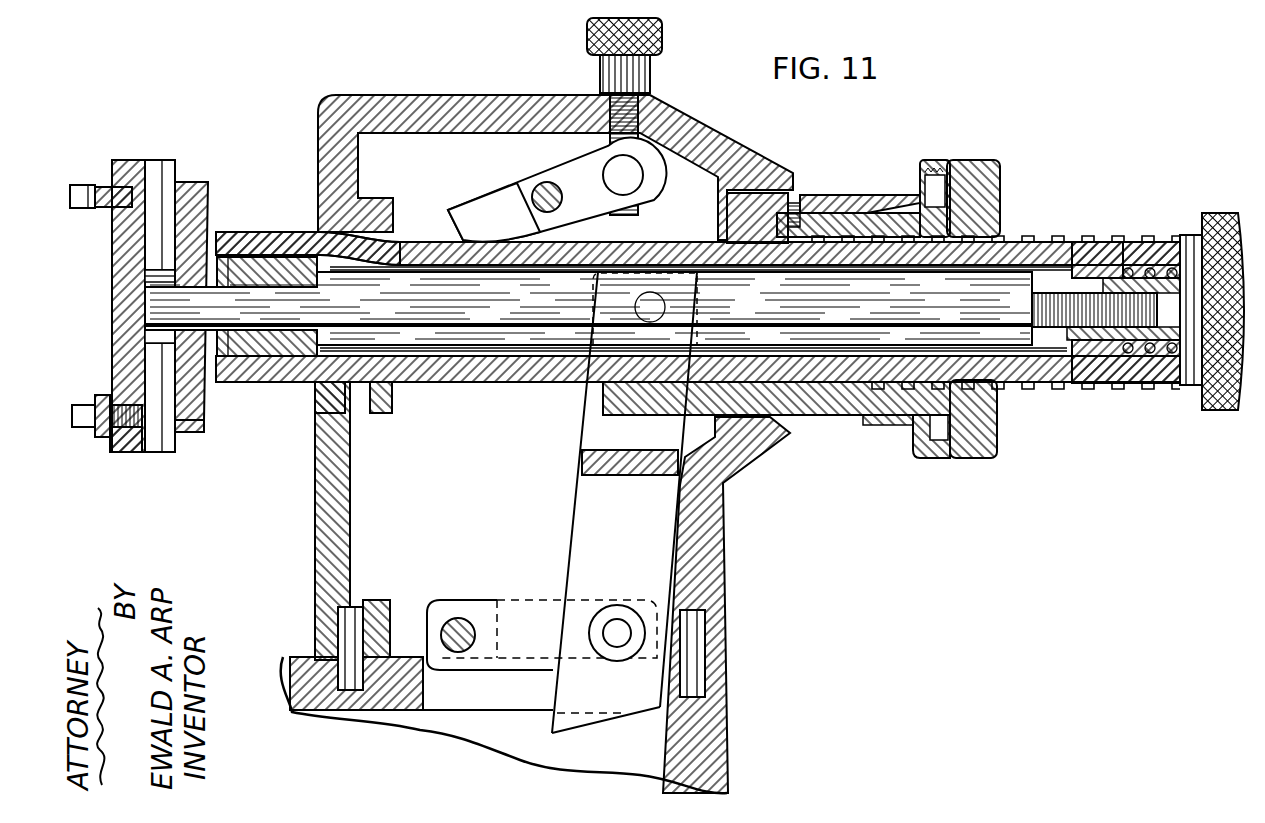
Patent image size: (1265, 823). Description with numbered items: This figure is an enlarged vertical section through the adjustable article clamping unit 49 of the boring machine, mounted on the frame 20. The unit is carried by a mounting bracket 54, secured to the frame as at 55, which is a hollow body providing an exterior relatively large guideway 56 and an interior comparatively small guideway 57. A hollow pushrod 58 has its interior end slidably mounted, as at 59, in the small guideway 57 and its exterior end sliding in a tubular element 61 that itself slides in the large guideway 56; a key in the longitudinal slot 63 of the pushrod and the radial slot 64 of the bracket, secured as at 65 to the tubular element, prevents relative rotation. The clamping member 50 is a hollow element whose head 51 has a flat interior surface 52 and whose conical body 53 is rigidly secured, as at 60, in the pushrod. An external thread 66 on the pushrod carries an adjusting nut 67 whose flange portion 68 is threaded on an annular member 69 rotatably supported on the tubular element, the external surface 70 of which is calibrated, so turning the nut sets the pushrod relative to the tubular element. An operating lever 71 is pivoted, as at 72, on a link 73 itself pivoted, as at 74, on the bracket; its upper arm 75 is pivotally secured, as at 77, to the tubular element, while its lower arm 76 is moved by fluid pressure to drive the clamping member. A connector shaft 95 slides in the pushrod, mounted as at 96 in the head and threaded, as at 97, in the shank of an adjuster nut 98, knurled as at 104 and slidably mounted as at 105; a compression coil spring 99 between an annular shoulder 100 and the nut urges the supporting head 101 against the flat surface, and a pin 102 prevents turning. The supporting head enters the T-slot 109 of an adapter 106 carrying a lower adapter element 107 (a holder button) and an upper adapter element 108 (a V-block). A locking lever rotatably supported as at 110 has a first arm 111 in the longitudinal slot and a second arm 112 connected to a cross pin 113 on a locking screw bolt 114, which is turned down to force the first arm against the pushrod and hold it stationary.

The frame 20 is at (380, 705).
The adjustable article clamping unit 49 is at (884, 132).
The clamping member 50 is at (208, 200).
The head 51 is at (190, 433).
The flat interior surface 52 is at (178, 377).
The conical body 53 is at (282, 355).
The mounting bracket 54 is at (328, 520).
The securing means of mounting bracket 55 is at (692, 645).
The exterior relatively large guideway 56 is at (770, 420).
The interior comparatively small guideway 57 is at (378, 410).
The hollow pushrod 58 is at (510, 377).
The slidable mounting of pushrod 59 is at (318, 423).
The securing of conical body 60 is at (272, 246).
The tubular element 61 is at (832, 408).
The longitudinal slot 63 is at (660, 244).
The radial slot 64 is at (720, 200).
The key securing 65 is at (795, 205).
The external thread 66 is at (1085, 244).
The adjusting nut 67 is at (985, 180).
The flange portion 68 is at (940, 164).
The annular member 69 is at (932, 182).
The external surface 70 is at (890, 198).
The operating lever 71 is at (592, 514).
The pivotal mounting 72 is at (612, 628).
The link 73 is at (484, 610).
The link pivot 74 is at (455, 625).
The upper arm 75 is at (598, 438).
The lower arm 76 is at (595, 722).
The pivotal securing 77 is at (665, 305).
The connector shaft 95 is at (447, 316).
The slidable mounting of connector shaft 96 is at (214, 282).
The adjustable threading 97 is at (1092, 330).
The adjuster nut 98 is at (1108, 352).
The compression coil spring 99 is at (1170, 268).
The annular shoulder 100 is at (1126, 268).
The supporting head 101 is at (152, 337).
The pin 102 is at (158, 272).
The knurling 104 is at (1214, 405).
The slidable mounting of adjuster nut shank 105 is at (1110, 280).
The adapter 106 is at (133, 168).
The lower adapter element 107 is at (85, 420).
The upper adapter element 108 is at (85, 192).
The T-slot 109 is at (155, 445).
The rotatable support of locking lever 110 is at (542, 185).
The first arm 111 is at (487, 202).
The second arm 112 is at (584, 180).
The cross pin 113 is at (632, 176).
The locking screw bolt 114 is at (650, 82).